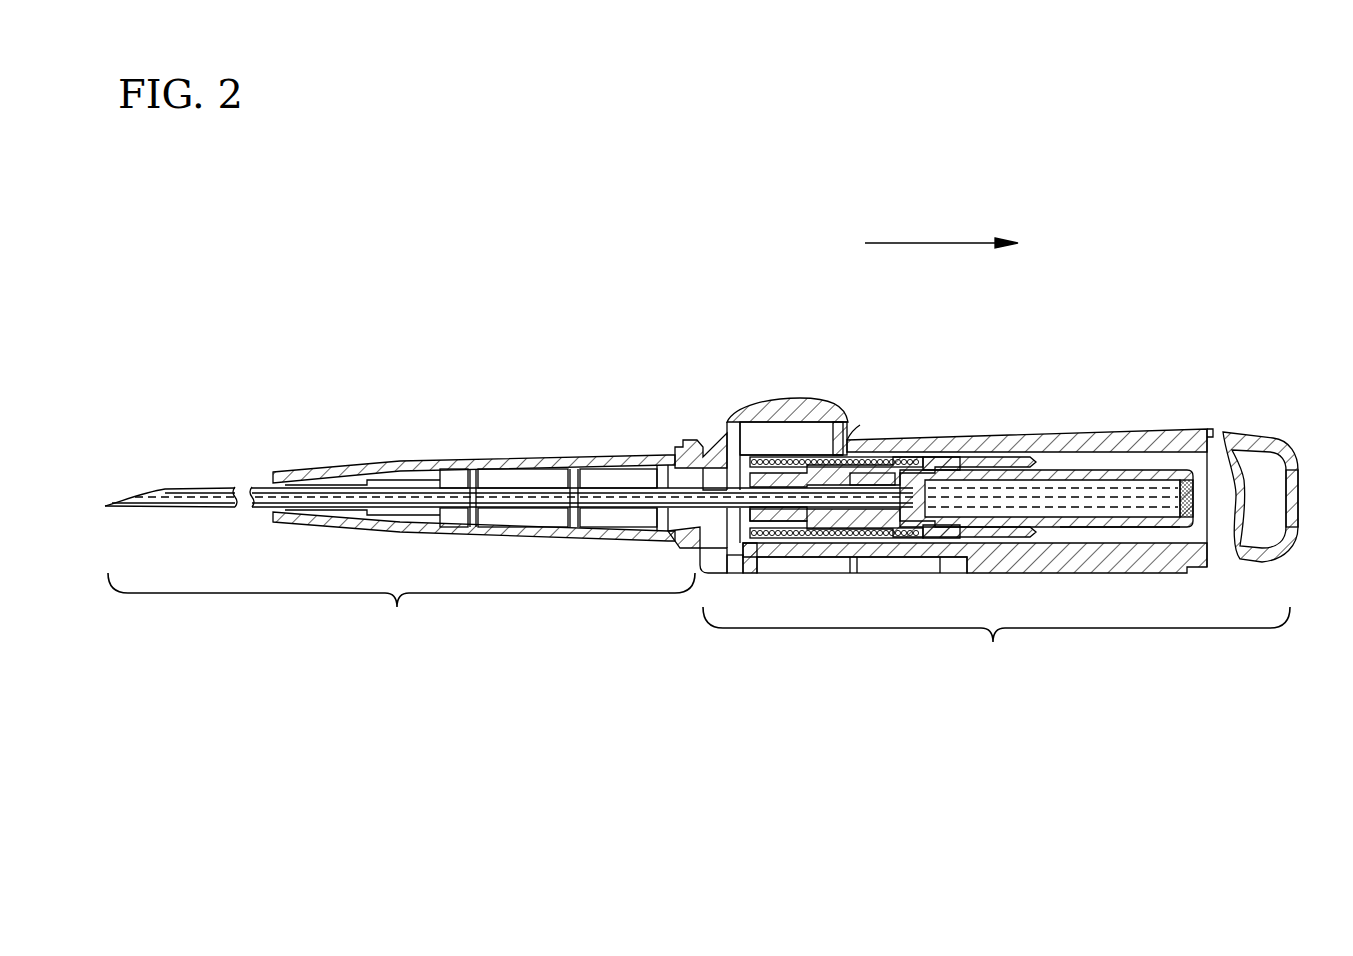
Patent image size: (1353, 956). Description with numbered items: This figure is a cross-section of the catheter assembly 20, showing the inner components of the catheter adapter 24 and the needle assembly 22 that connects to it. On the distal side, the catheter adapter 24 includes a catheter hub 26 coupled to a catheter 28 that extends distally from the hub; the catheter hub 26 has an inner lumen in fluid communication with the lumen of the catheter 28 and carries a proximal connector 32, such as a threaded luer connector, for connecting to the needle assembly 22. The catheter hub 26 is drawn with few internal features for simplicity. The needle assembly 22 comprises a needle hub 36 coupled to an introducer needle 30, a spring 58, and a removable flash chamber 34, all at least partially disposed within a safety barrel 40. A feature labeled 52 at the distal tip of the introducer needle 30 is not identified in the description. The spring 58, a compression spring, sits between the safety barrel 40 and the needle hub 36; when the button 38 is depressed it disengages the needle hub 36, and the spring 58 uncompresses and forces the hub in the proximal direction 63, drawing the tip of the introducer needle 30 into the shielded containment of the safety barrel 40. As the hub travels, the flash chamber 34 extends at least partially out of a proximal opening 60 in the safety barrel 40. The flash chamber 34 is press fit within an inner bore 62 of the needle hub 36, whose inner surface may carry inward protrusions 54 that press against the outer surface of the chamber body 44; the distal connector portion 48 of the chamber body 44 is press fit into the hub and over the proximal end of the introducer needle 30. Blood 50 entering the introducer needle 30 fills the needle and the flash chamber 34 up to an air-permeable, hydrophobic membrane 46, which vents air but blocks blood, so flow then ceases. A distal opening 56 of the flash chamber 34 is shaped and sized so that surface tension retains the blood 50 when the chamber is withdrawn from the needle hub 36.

The catheter assembly 20 is at (531, 246).
The needle assembly 22 is at (996, 637).
The catheter adapter 24 is at (401, 603).
The catheter hub 26 is at (452, 462).
The catheter 28 is at (233, 508).
The introducer needle 30 is at (531, 470).
The proximal connector 32 is at (697, 553).
The flash chamber 34 is at (1128, 472).
The needle hub 36 is at (776, 545).
The button 38 is at (796, 400).
The safety barrel 40 is at (1260, 440).
The chamber body 44 is at (1107, 530).
The membrane 46 is at (1192, 482).
The distal connector portion 48 is at (907, 473).
The blood 50 is at (1085, 492).
The needle tip 52 is at (106, 503).
The inward protrusions 54 is at (1020, 452).
The distal opening 56 is at (893, 543).
The spring 58 is at (823, 543).
The proximal opening 60 is at (1298, 480).
The inner bore 62 is at (862, 485).
The proximal direction 63 is at (893, 243).